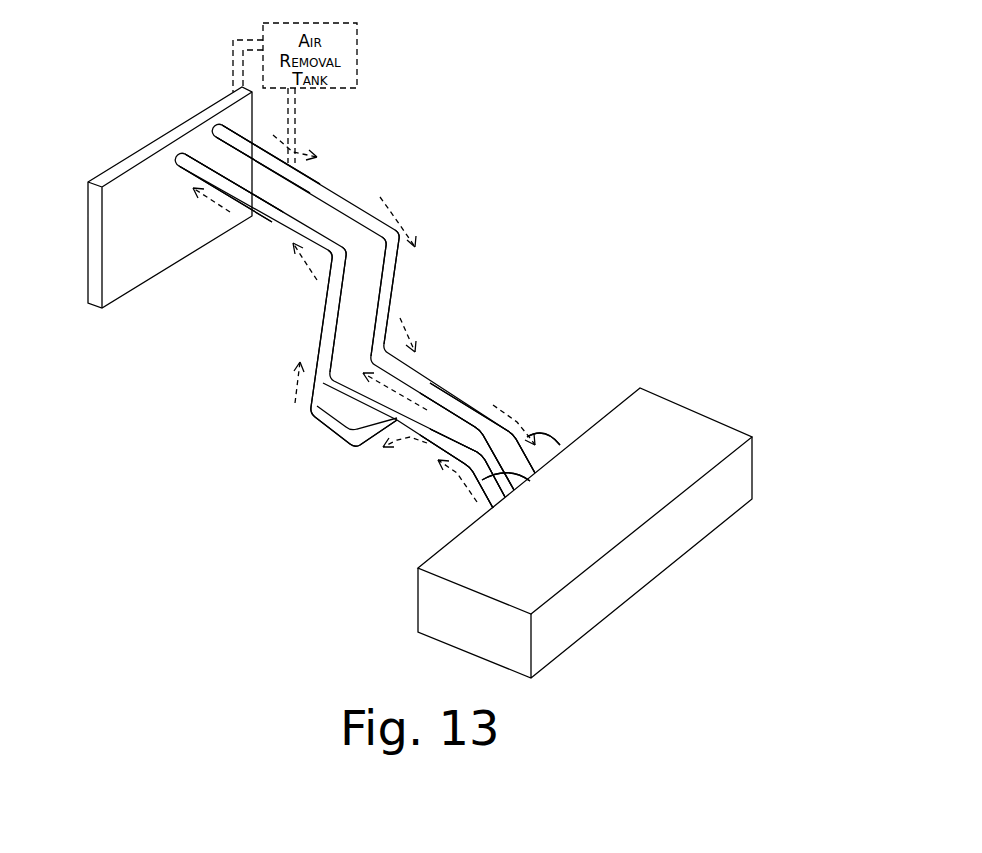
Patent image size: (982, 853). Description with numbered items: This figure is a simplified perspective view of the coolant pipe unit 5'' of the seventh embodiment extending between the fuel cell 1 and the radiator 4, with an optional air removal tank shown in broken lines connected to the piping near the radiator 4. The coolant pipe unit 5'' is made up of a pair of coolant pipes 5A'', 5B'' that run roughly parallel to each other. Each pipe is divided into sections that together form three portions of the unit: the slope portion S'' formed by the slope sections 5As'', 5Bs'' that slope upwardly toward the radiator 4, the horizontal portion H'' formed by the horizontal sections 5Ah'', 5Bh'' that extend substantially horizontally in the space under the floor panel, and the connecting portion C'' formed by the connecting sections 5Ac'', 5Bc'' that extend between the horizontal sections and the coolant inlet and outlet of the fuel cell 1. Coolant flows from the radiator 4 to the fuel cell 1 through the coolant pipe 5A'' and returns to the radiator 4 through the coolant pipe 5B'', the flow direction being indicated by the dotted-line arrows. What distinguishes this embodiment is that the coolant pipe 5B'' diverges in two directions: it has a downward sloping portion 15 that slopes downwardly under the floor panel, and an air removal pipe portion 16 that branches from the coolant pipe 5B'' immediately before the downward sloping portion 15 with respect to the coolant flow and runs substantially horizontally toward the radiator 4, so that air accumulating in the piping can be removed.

The fuel cell 1 is at (693, 437).
The radiator 4 is at (138, 175).
The downward sloping portion 15 is at (318, 424).
The air removal pipe portion 16 is at (372, 397).
The coolant pipe 5A'' is at (382, 307).
The coolant pipe 5B'' is at (363, 330).
The slope section 5As'' is at (337, 173).
The slope section 5Bs'' is at (290, 170).
The horizontal section 5Ah'' is at (508, 425).
The horizontal section 5Bh'' is at (506, 417).
The connecting section 5Ac'' is at (635, 523).
The connecting section 5Bc'' is at (613, 562).
The slope portion S'' is at (320, 149).
The coolant pipe unit 5'' is at (467, 318).
The horizontal portion H'' is at (535, 411).
The connecting portion C'' is at (644, 546).